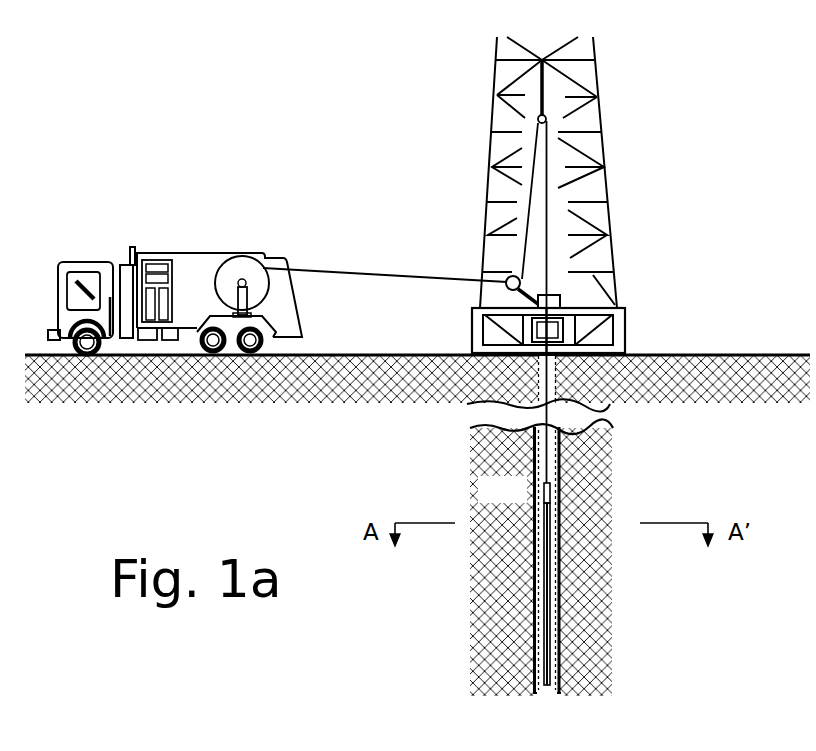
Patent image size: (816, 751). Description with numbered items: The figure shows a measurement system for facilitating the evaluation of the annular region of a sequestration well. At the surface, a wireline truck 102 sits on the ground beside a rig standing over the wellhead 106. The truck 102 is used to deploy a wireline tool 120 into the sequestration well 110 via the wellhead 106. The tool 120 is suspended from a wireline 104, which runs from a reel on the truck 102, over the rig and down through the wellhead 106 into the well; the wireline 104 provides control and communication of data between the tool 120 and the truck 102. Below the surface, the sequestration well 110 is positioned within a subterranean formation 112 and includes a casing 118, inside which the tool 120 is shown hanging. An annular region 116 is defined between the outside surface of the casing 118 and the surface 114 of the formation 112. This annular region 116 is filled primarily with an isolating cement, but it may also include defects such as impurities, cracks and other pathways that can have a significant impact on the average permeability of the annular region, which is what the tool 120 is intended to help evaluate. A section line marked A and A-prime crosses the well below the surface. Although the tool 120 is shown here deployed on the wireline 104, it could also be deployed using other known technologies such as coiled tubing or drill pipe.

The wireline truck 102 is at (215, 252).
The wireline 104 is at (362, 276).
The wellhead 106 is at (654, 301).
The sequestration well 110 is at (427, 481).
The subterranean formation 112 is at (523, 500).
The surface of formation 114 is at (534, 578).
The annular region 116 is at (534, 620).
The casing 118 is at (555, 632).
The wireline tool 120 is at (556, 558).